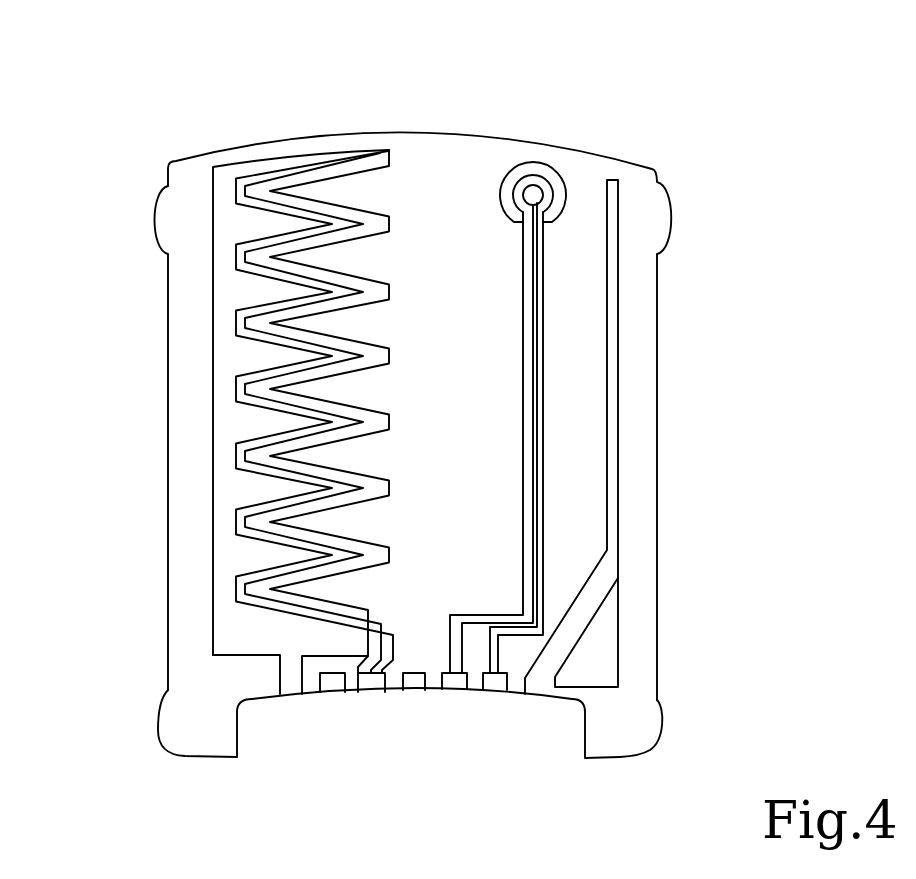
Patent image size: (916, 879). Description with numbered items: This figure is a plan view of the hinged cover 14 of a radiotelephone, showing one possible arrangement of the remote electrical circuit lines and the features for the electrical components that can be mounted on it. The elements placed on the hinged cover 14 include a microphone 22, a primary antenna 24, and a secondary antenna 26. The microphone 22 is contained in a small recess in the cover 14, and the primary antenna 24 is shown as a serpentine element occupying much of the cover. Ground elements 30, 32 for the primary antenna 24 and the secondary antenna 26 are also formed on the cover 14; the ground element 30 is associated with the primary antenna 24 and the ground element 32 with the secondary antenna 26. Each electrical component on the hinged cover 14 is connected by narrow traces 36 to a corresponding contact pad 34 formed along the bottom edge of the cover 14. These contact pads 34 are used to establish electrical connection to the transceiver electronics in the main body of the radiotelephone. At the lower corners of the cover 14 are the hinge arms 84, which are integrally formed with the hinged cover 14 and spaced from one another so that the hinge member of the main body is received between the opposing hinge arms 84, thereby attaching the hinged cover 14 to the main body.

The hinged cover 14 is at (364, 107).
The microphone 22 is at (536, 190).
The primary antenna 24 is at (367, 288).
The secondary antenna 26 is at (615, 336).
The ground element 30 is at (240, 360).
The ground element 32 is at (603, 650).
The contact pad 34 is at (288, 690).
The narrow traces 36 is at (527, 417).
The hinge arms 84 is at (198, 717).